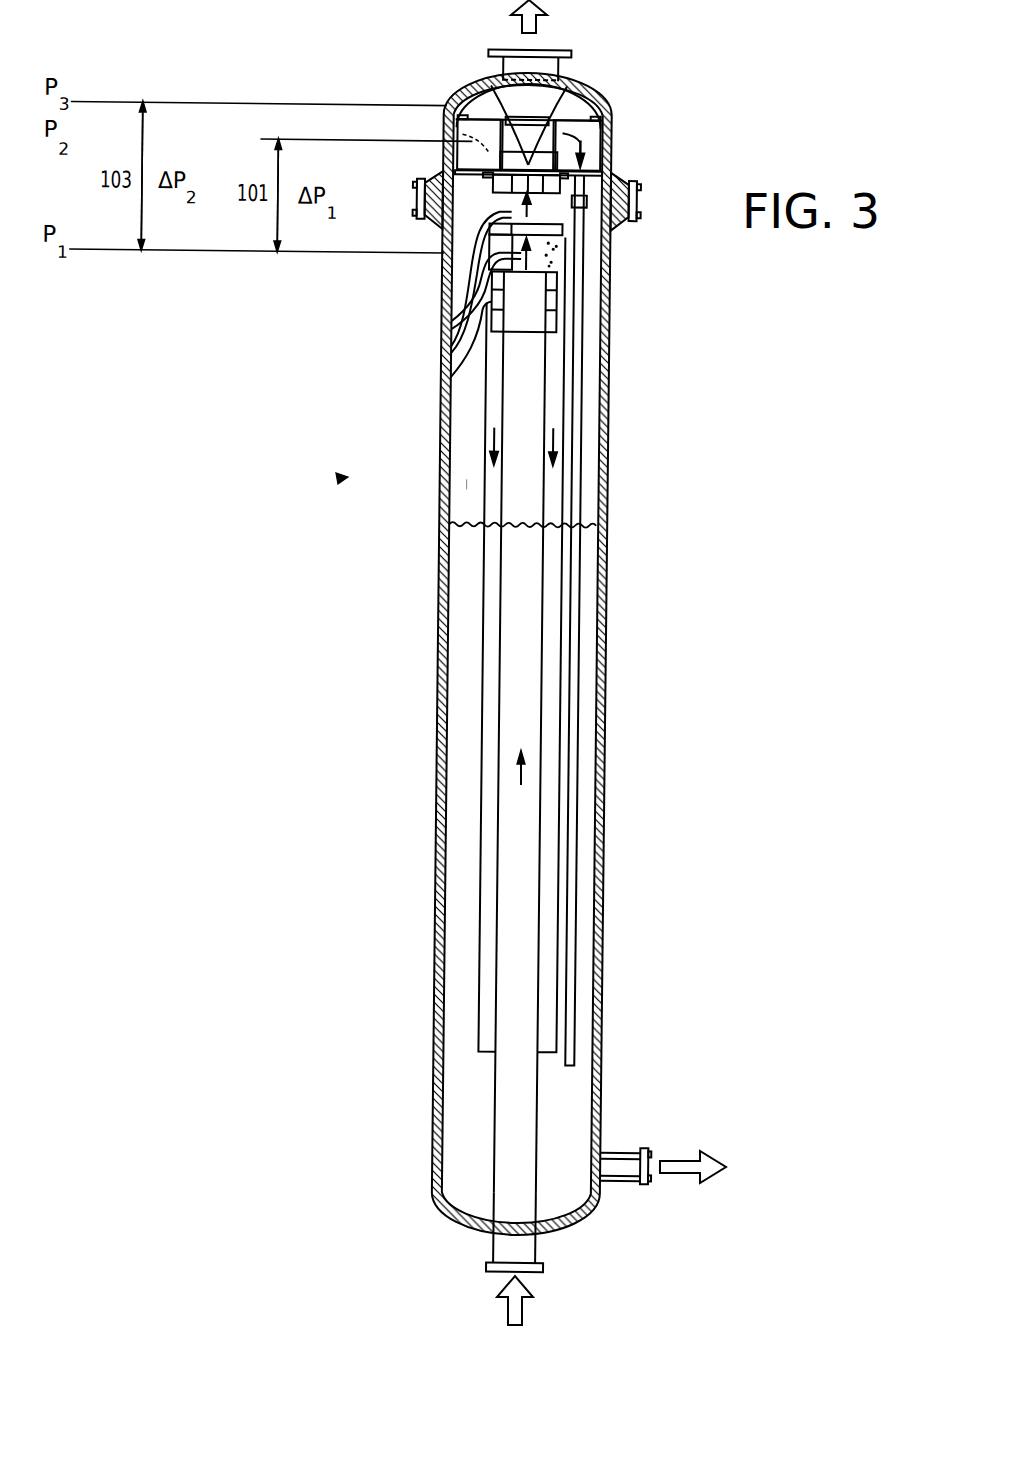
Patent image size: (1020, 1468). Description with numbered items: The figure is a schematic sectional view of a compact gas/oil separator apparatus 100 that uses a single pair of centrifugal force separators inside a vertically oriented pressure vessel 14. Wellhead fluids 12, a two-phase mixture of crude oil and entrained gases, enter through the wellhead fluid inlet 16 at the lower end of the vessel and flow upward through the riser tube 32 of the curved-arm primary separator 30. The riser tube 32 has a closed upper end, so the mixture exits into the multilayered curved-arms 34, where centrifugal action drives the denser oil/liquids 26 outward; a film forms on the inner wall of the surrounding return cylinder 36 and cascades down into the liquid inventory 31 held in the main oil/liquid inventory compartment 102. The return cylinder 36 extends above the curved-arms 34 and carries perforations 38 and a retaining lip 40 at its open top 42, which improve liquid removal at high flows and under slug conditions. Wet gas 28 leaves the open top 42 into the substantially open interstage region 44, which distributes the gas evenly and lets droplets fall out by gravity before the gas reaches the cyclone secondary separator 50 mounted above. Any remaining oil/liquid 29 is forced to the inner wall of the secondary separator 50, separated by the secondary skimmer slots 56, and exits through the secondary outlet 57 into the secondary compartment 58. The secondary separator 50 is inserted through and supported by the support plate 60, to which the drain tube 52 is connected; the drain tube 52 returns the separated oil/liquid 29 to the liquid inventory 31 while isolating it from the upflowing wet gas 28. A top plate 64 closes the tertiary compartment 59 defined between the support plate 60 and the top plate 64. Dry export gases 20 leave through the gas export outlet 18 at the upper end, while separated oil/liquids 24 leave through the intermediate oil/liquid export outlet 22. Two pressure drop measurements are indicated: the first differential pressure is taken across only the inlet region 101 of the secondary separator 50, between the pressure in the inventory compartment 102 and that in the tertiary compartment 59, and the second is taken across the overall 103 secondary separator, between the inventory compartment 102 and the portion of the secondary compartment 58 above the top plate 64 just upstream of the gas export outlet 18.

The wellhead fluids 12 is at (520, 783).
The pressure vessel 14 is at (605, 700).
The wellhead fluid inlet 16 is at (505, 1250).
The gas export outlet 18 is at (538, 67).
The separated gases 20 is at (540, 17).
The oil/liquid export outlet 22 is at (620, 1165).
The separated oil/liquids 24 is at (678, 1168).
The oil/liquids separated by primary separator 26 is at (556, 432).
The wet gas 28 is at (447, 349).
The remaining oil/liquid 29 is at (584, 124).
The primary separator 30 is at (558, 302).
The liquid inventory 31 is at (535, 523).
The riser tube 32 is at (540, 920).
The curved-arms 34 is at (455, 372).
The return cylinder 36 is at (566, 352).
The perforations 38 is at (557, 252).
The retaining lip 40 is at (565, 233).
The open top 42 is at (455, 323).
The interstage region 44 is at (563, 213).
The secondary separator 50 is at (478, 135).
The drain tube 52 is at (578, 605).
The secondary skimmer slots 56 is at (562, 88).
The secondary outlet 57 is at (490, 85).
The secondary compartment 58 is at (578, 110).
The tertiary compartment 59 is at (472, 152).
The support plate 60 is at (455, 287).
The top plate 64 is at (478, 107).
The compact gas/oil separator apparatus 100 is at (340, 480).
The inlet region 101 is at (277, 195).
The main oil/liquid inventory compartment 102 is at (465, 484).
The overall secondary separator span 103 is at (141, 176).